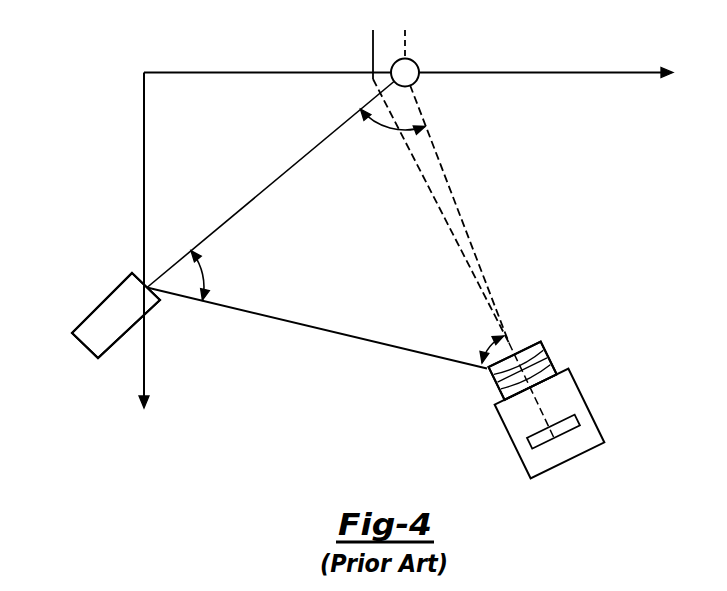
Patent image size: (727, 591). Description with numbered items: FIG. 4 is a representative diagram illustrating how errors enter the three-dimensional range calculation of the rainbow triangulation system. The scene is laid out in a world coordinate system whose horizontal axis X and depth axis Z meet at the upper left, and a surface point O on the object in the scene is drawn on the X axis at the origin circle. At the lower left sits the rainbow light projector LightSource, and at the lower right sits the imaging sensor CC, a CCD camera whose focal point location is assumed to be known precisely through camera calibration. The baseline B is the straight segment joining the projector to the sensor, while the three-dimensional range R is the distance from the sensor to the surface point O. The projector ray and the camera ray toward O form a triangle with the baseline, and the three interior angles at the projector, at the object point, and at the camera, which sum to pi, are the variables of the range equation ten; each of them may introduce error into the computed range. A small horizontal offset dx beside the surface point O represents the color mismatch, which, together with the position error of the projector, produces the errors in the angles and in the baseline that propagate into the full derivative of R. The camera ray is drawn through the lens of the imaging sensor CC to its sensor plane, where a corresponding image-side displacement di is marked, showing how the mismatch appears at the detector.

The X axis X is at (408, 63).
The Z axis Z is at (153, 243).
The surface point O is at (420, 67).
The color mismatch dx is at (389, 42).
The three-dimensional range R is at (464, 259).
The baseline B is at (317, 328).
The rainbow light projector LightSource is at (99, 342).
The imaging sensor (CCD) CC is at (555, 407).
The image displacement di is at (555, 440).